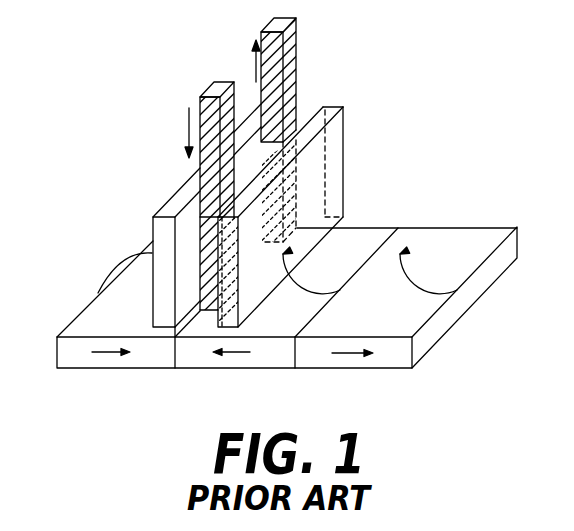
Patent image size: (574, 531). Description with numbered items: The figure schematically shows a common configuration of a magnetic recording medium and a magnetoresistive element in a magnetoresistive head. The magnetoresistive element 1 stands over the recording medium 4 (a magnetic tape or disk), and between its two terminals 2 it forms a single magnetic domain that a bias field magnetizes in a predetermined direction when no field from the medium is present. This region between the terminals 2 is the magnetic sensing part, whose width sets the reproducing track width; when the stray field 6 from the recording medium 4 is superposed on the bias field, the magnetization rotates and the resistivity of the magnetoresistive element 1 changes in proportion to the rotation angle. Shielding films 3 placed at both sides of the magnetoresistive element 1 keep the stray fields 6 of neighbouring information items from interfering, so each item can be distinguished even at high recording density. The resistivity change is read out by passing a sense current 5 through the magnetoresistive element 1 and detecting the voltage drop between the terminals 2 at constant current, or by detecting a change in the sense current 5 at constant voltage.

The magnetoresistive element 1 is at (266, 152).
The terminals 2 is at (200, 98).
The shielding films 3 is at (153, 330).
The recording medium 4 is at (391, 360).
The sense current 5 is at (189, 135).
The stray field 6 is at (416, 252).